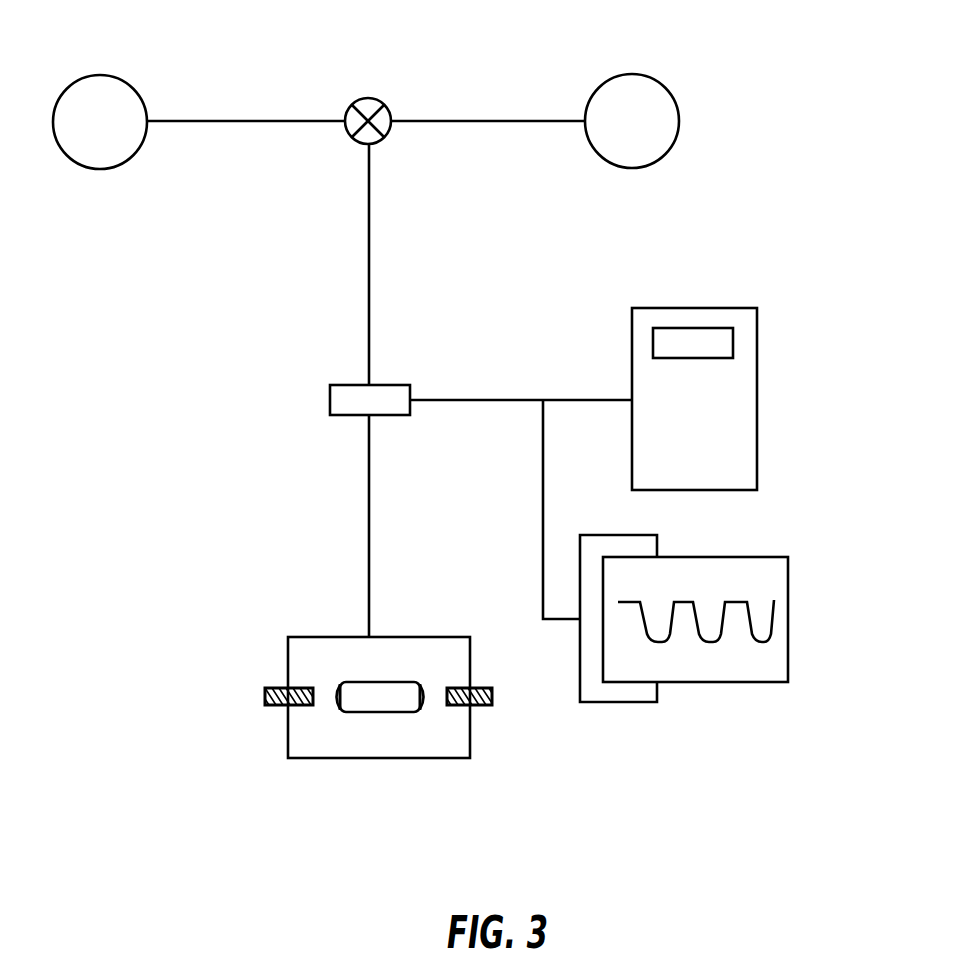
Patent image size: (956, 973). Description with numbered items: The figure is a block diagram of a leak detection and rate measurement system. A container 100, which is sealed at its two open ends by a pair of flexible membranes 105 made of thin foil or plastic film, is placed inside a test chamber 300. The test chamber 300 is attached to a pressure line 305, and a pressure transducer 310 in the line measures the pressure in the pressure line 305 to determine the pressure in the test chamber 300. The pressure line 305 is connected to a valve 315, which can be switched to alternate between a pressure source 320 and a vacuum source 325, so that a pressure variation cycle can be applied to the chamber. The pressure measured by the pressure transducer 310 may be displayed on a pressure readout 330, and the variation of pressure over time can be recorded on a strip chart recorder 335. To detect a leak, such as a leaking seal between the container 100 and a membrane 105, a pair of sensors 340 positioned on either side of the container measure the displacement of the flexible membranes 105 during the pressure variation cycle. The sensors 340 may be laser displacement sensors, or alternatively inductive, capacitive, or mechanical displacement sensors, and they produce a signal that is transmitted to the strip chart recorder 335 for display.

The container 100 is at (343, 751).
The flexible membranes 105 is at (376, 648).
The test chamber 300 is at (391, 728).
The pressure line 305 is at (309, 526).
The pressure transducer 310 is at (280, 348).
The valve 315 is at (416, 87).
The pressure source 320 is at (137, 89).
The vacuum source 325 is at (667, 87).
The pressure readout 330 is at (722, 365).
The strip chart recorder 335 is at (684, 646).
The sensors 340 is at (381, 730).